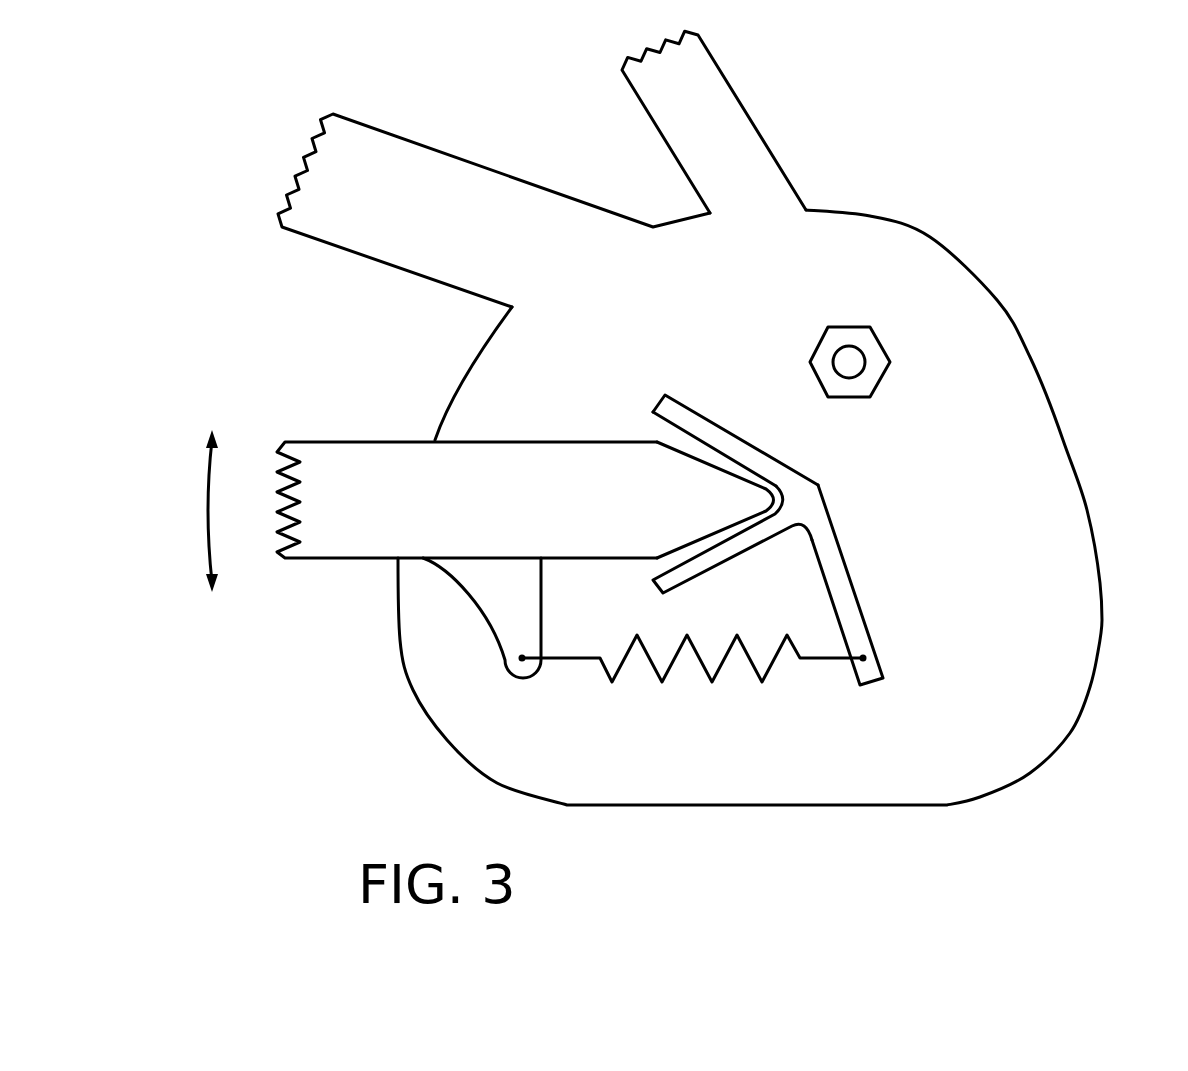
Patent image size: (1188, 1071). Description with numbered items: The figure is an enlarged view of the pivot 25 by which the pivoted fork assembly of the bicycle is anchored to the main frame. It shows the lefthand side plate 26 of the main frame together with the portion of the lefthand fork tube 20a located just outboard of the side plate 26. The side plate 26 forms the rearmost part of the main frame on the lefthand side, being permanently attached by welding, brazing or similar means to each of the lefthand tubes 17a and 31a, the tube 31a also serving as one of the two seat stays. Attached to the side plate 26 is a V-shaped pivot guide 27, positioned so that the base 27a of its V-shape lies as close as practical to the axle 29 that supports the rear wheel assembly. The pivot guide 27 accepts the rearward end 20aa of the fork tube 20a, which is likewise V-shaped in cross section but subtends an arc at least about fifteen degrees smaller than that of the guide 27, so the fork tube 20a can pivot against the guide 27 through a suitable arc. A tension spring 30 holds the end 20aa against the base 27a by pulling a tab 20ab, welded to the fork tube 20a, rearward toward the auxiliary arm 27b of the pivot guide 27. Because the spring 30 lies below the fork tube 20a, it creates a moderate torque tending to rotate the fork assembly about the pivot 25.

The lefthand tube 17a is at (513, 177).
The lefthand tube (seat stay) 31a is at (744, 112).
The axle 29 is at (855, 327).
The lefthand side plate 26 is at (1088, 685).
The lefthand fork tube 20a is at (525, 470).
The rearward end of fork tube 20aa is at (757, 515).
The tab 20ab is at (542, 598).
The V-shaped pivot guide 27 is at (690, 410).
The base of the V-shape 27a is at (784, 497).
The auxiliary arm 27b is at (867, 622).
The pivot 25 is at (816, 525).
The tension spring 30 is at (673, 663).